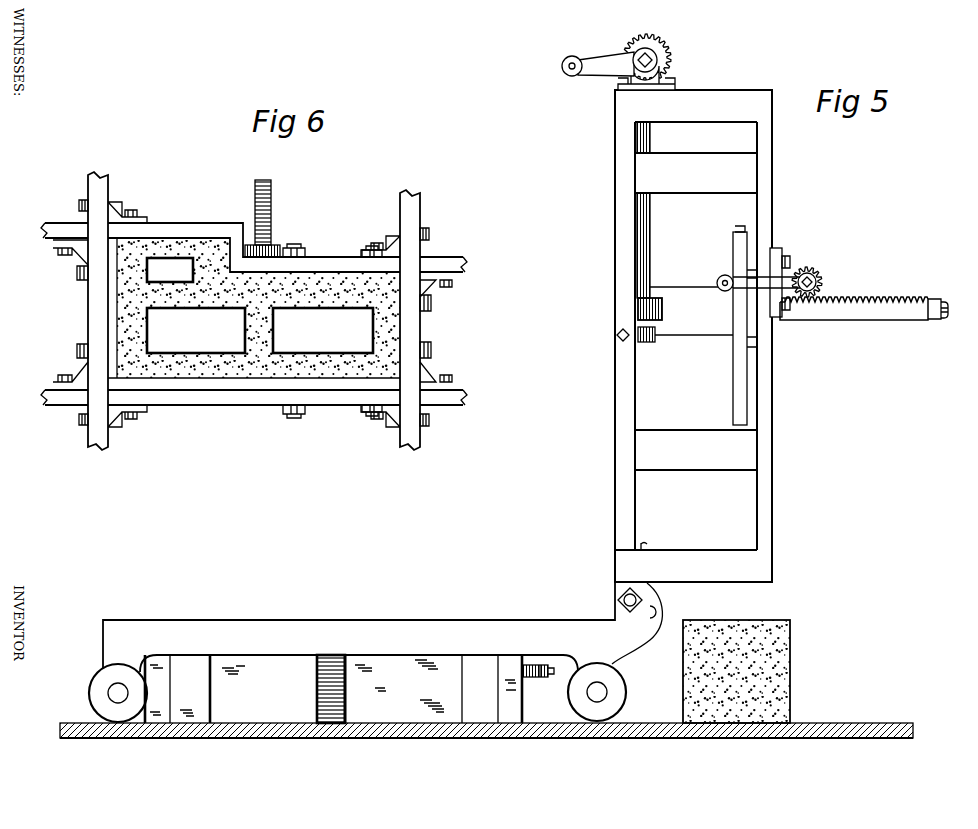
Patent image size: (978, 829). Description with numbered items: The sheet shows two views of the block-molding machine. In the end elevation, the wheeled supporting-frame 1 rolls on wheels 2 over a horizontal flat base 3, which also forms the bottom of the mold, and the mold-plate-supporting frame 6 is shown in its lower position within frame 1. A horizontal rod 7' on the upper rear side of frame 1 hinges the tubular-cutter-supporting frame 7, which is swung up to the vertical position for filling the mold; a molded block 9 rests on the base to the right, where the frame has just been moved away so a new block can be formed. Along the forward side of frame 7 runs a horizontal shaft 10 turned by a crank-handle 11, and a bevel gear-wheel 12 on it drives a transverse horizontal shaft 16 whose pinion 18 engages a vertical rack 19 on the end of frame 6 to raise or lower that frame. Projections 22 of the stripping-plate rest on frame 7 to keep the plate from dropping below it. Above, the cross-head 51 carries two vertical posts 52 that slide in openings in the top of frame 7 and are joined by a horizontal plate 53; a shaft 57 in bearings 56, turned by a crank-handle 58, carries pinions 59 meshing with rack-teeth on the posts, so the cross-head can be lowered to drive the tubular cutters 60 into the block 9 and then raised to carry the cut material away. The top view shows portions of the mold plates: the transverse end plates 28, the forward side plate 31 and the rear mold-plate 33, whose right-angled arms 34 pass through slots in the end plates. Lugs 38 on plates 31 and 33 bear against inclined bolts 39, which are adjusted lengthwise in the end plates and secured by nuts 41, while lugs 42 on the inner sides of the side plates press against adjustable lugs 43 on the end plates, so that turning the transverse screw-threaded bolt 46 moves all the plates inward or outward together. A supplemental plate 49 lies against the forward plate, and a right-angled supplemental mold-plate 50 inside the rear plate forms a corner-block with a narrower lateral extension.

In FIG. 5, the supporting-frame 1 is at (359, 627).
In FIG. 5, the wheels 2 is at (90, 698).
In FIG. 5, the base 3 is at (287, 723).
In FIG. 5, the mold-plate-supporting frame 6 is at (433, 689).
In FIG. 5, the tubular-cutter-supporting frame 7 is at (702, 336).
In FIG. 5, the rod 7' is at (617, 623).
In FIG. 6, the molded block 9 is at (236, 306).
In FIG. 5, the molded block 9 is at (790, 653).
In FIG. 5, the shaft 10 is at (673, 77).
In FIG. 5, the crank-handle 11 is at (601, 68).
In FIG. 5, the bevel gear-wheel 12 is at (666, 62).
In FIG. 5, the transverse horizontal shaft 16 is at (650, 146).
In FIG. 5, the pinion 18 is at (667, 328).
In FIG. 5, the vertical rack 19 is at (345, 676).
In FIG. 5, the projections 22 is at (653, 532).
In FIG. 6, the end plates 28 is at (88, 188).
In FIG. 6, the forward side plate 31 is at (246, 398).
In FIG. 6, the rear mold-plate 33 is at (330, 251).
In FIG. 6, the arms 34 is at (452, 257).
In FIG. 6, the lugs 38 is at (145, 222).
In FIG. 6, the bolts 39 is at (114, 216).
In FIG. 6, the nuts 41 is at (80, 212).
In FIG. 6, the lugs 42 is at (60, 250).
In FIG. 6, the adjustable lugs 43 is at (77, 283).
In FIG. 6, the screw-threaded bolt 46 is at (271, 210).
In FIG. 5, the screw-threaded bolt 46 is at (537, 678).
In FIG. 6, the supplemental plate 49 is at (337, 384).
In FIG. 6, the right-angled supplemental mold-plate 50 is at (355, 276).
In FIG. 5, the cross-head 51 is at (733, 363).
In FIG. 5, the posts 52 is at (887, 312).
In FIG. 5, the horizontal plate 53 is at (937, 320).
In FIG. 5, the bearings 56 is at (782, 253).
In FIG. 5, the shaft 57 is at (823, 282).
In FIG. 5, the crank-handle 58 is at (724, 275).
In FIG. 5, the pinions 59 is at (814, 269).
In FIG. 5, the tubular cutters 60 is at (691, 311).